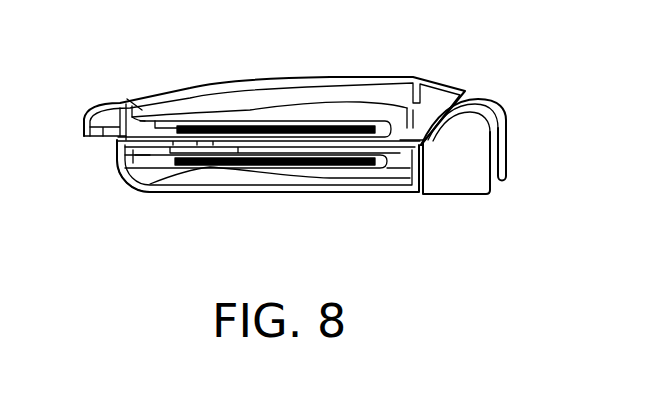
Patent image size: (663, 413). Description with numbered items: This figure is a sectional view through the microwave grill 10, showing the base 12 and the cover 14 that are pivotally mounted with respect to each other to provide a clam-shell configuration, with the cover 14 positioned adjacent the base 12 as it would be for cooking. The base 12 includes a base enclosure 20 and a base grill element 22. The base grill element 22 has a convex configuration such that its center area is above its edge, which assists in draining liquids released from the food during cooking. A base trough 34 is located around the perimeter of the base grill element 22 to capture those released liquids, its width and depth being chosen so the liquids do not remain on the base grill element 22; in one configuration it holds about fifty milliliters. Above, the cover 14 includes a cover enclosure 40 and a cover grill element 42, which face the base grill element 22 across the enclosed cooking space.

The microwave grill 10 is at (432, 232).
The base 12 is at (152, 180).
The cover 14 is at (142, 103).
The base enclosure 20 is at (331, 195).
The base grill element 22 is at (214, 168).
The base trough 34 is at (149, 191).
The cover enclosure 40 is at (224, 87).
The cover grill element 42 is at (352, 123).